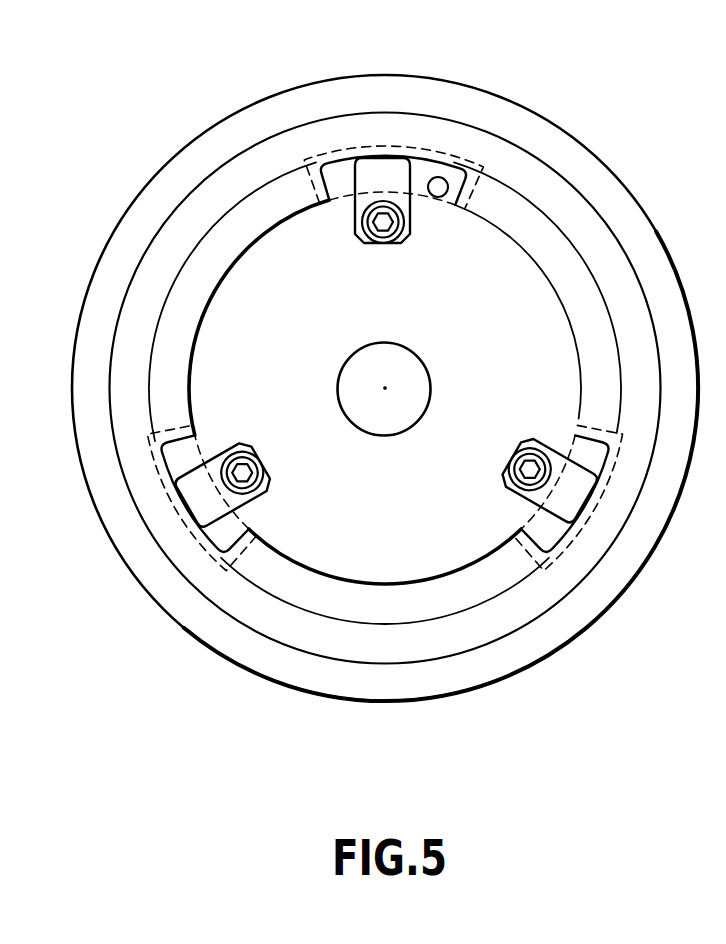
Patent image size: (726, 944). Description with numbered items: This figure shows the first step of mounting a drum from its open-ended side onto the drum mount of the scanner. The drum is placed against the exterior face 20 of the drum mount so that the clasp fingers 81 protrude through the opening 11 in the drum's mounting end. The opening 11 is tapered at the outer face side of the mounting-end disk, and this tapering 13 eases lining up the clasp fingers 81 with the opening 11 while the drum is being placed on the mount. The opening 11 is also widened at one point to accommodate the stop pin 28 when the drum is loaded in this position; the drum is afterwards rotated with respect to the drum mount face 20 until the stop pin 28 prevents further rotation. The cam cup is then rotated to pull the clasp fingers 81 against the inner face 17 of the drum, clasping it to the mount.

The opening 11 is at (533, 532).
The tapering 13 is at (573, 547).
The inner face 17 is at (212, 289).
The exterior face 20 is at (477, 350).
The stop pin 28 is at (438, 198).
The clasp finger 81 is at (356, 210).